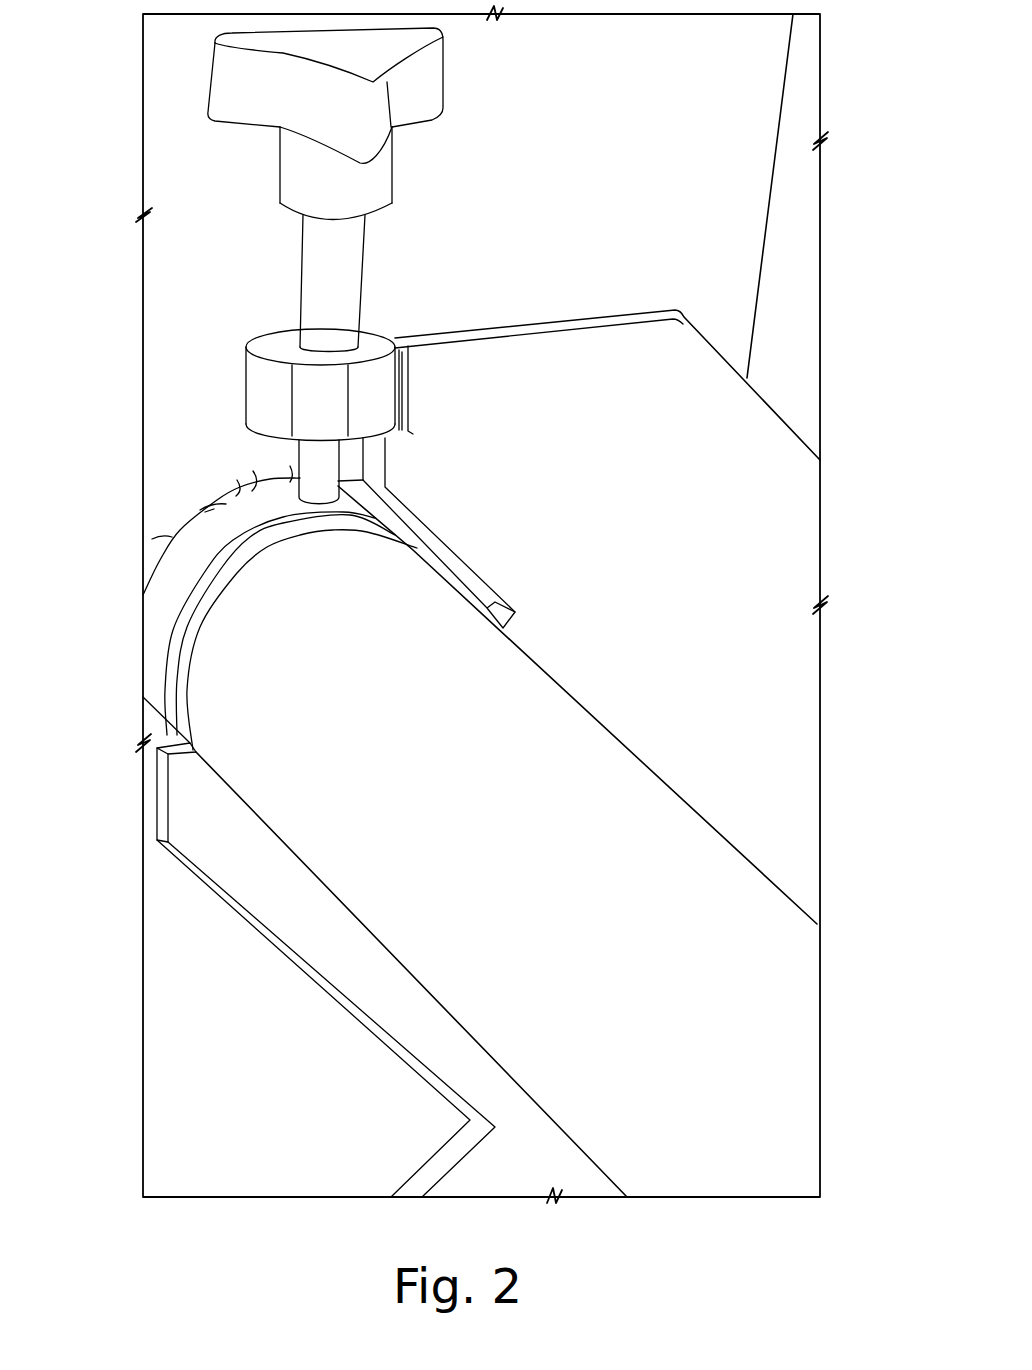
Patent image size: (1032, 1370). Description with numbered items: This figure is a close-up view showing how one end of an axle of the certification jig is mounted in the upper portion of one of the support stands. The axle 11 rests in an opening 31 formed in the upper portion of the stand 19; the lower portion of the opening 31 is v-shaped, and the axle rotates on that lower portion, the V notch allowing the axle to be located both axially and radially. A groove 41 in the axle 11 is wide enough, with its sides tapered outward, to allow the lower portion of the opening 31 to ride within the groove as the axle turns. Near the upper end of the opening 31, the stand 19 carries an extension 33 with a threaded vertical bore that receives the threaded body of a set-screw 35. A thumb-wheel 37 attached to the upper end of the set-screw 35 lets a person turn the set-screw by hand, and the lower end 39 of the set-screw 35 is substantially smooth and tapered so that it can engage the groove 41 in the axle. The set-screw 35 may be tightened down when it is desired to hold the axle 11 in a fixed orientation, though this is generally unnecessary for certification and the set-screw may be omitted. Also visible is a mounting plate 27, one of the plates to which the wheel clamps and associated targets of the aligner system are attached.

The axle 11 is at (700, 886).
The support stand 19 is at (690, 367).
The mounting plate 27 is at (750, 111).
The opening 31 is at (196, 752).
The extension 33 is at (250, 382).
The set-screw 35 is at (307, 263).
The thumb-wheel 37 is at (240, 77).
The lower end of the set-screw 39 is at (299, 453).
The groove 41 is at (216, 593).